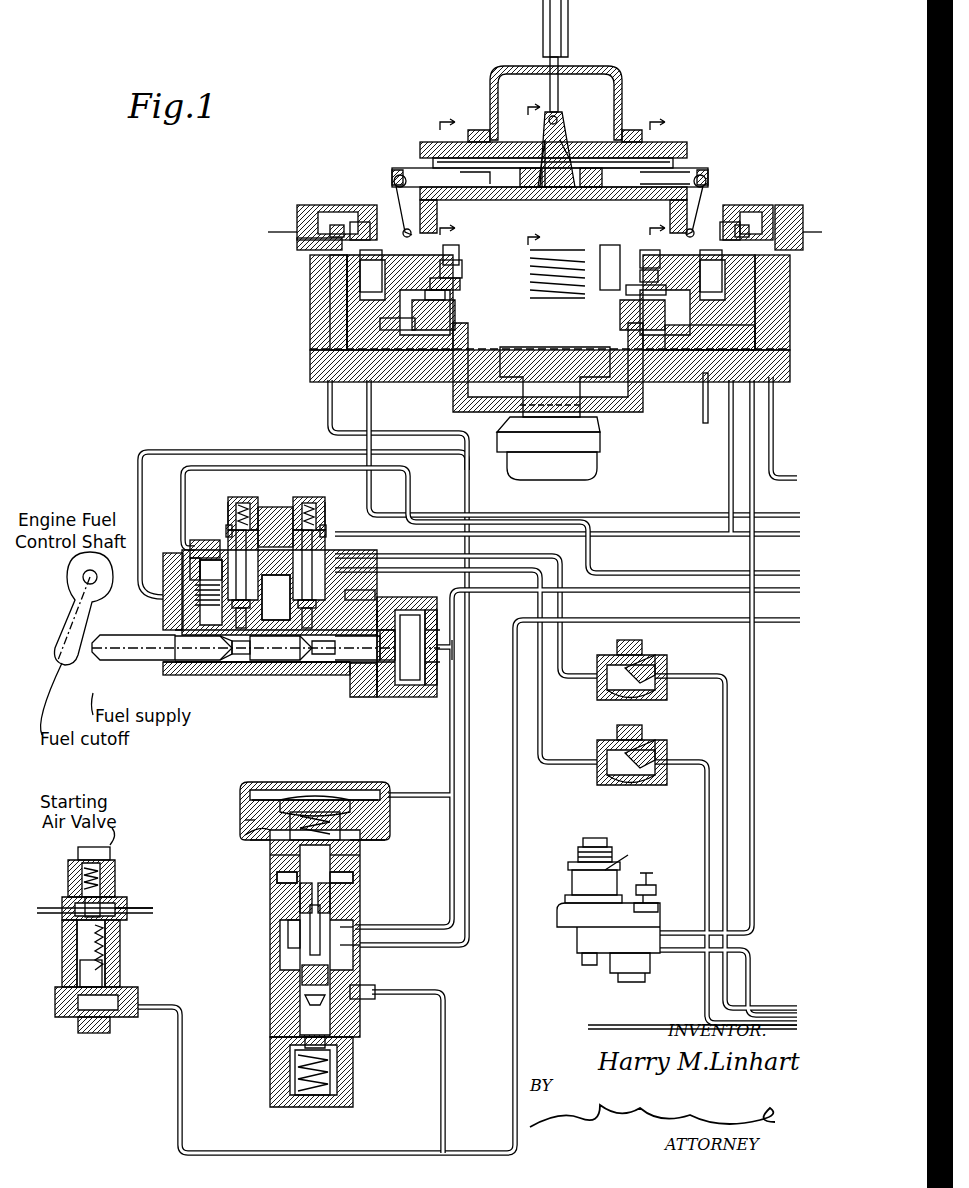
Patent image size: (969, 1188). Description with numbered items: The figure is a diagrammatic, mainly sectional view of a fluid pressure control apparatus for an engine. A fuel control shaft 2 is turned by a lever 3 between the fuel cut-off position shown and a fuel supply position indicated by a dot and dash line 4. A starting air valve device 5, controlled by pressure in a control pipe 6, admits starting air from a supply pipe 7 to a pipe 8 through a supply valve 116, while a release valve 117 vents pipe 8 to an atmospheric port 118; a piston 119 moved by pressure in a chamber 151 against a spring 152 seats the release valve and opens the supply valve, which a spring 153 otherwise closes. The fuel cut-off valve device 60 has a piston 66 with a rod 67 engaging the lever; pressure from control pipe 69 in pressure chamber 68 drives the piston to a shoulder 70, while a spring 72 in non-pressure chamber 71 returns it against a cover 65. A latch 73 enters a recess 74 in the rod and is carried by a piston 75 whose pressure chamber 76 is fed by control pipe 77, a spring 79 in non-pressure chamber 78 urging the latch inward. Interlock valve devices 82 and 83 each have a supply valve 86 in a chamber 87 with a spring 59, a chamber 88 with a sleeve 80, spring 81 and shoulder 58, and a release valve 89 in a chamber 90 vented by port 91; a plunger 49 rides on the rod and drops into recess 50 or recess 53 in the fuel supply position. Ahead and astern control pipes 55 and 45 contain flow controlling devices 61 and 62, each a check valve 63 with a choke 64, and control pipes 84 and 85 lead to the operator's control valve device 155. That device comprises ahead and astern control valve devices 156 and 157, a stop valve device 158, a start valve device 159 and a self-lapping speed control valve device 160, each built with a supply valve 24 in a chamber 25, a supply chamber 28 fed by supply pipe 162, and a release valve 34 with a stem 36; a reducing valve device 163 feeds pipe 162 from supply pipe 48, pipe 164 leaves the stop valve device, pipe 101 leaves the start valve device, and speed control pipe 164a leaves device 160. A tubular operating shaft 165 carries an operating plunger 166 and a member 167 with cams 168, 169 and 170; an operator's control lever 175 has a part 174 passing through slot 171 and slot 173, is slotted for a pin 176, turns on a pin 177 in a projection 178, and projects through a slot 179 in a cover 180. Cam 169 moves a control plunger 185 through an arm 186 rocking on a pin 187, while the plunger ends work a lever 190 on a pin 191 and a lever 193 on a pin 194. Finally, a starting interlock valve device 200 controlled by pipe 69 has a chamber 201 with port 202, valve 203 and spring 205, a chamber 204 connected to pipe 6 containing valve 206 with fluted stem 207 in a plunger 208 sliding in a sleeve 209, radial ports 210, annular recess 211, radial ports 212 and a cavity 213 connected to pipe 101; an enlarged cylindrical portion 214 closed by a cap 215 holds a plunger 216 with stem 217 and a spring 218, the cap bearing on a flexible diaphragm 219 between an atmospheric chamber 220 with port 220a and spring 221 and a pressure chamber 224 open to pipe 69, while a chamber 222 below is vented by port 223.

The fuel control shaft 2 is at (82, 575).
The lever 3 is at (42, 608).
The dot and dash line 4 is at (75, 688).
The starting air valve device 5 is at (33, 968).
The control pipe 6 is at (183, 1112).
The starting air supply pipe 7 is at (145, 908).
The pipe 8 is at (38, 908).
The supply valve 24 is at (300, 235).
The chamber 25 is at (305, 205).
The chamber 28 is at (332, 222).
The release valve 34 is at (358, 222).
The stem 36 is at (475, 248).
The astern control pipe 45 is at (495, 575).
The supply pipe 48 is at (630, 1025).
The plunger 49 is at (267, 647).
The recess 50 is at (295, 662).
The recess 53 is at (235, 662).
The ahead control pipe 55 is at (518, 565).
The shoulder 58 is at (195, 683).
The spring 59 is at (268, 501).
The fuel cut-off valve device 60 is at (243, 686).
The flow controlling device 61 is at (590, 693).
The flow controlling device 62 is at (590, 777).
The check valve 63 is at (645, 668).
The choke 64 is at (600, 665).
The cover 65 is at (440, 606).
The piston 66 is at (410, 685).
The rod 67 is at (265, 662).
The pressure chamber 68 is at (432, 690).
The control pipe 69 is at (455, 636).
The shoulder 70 is at (385, 606).
The non-pressure chamber 71 is at (375, 690).
The spring 72 is at (355, 697).
The latch 73 is at (170, 615).
The recess 74 is at (180, 670).
The piston 75 is at (190, 565).
The pressure chamber 76 is at (168, 598).
The control pipe 77 is at (175, 458).
The non-pressure chamber 78 is at (200, 562).
The spring 79 is at (190, 565).
The sleeve 80 is at (276, 597).
The spring 81 is at (275, 527).
The interlock valve device 82 is at (308, 503).
The interlock valve device 83 is at (252, 500).
The control pipe 84 is at (447, 530).
The control pipe 85 is at (507, 514).
The supply valve 86 is at (228, 525).
The chamber 87 is at (228, 512).
The chamber 88 is at (236, 552).
The release valve 89 is at (358, 591).
The chamber 90 is at (252, 604).
The port 91 is at (274, 621).
The pipe 101 is at (470, 695).
The fluid pressure supply valve 116 is at (100, 905).
The release valve 117 is at (118, 950).
The atmospheric port 118 is at (65, 945).
The piston 119 is at (70, 1003).
The chamber 151 is at (85, 1020).
The spring 152 is at (80, 985).
The spring 153 is at (100, 870).
The operator's control valve device 155 is at (310, 290).
The ahead control valve device 156 is at (625, 260).
The astern control valve device 157 is at (470, 287).
The stop valve device 158 is at (766, 205).
The start valve device 159 is at (338, 200).
The self-lapping speed control valve device 160 is at (603, 436).
The supply pipe 162 is at (754, 705).
The reducing valve device 163 is at (570, 880).
The pipe 164 is at (774, 415).
The speed control pipe 164a is at (704, 420).
The operating shaft 165 is at (675, 160).
The operating plunger 166 is at (690, 166).
The member 167 is at (665, 145).
The cam 168 is at (550, 178).
The cam 169 is at (530, 204).
The cam 170 is at (667, 178).
The slot 171 is at (568, 160).
The slot 173 is at (473, 178).
The part 174 is at (566, 140).
The operator's control lever 175 is at (565, 60).
The pin 176 is at (517, 178).
The pin 177 is at (558, 116).
The projection 178 is at (540, 150).
The slot 179 is at (552, 75).
The cover 180 is at (498, 70).
The control plunger 185 is at (557, 264).
The arm 186 is at (557, 287).
The pin 187 is at (618, 178).
The lever 190 is at (390, 200).
The pin 191 is at (347, 302).
The lever 193 is at (705, 210).
The pin 194 is at (710, 329).
The starting interlock valve device 200 is at (376, 981).
The chamber 201 is at (340, 1067).
The port 202 is at (285, 1048).
The valve 203 is at (340, 1040).
The chamber 204 is at (370, 1002).
The spring 205 is at (340, 1082).
The valve 206 is at (305, 998).
The fluted stem 207 is at (300, 975).
The plunger 208 is at (292, 898).
The sleeve 209 is at (350, 905).
The radial ports 210 is at (350, 930).
The annular recess 211 is at (295, 950).
The radial ports 212 is at (288, 930).
The cavity 213 is at (352, 948).
The enlarged cylindrical portion 214 is at (390, 836).
The cap 215 is at (330, 795).
The plunger 216 is at (275, 862).
The stem 217 is at (350, 866).
The spring 218 is at (345, 820).
The flexible diaphragm 219 is at (262, 790).
The chamber 220 is at (250, 812).
The port 220a is at (250, 840).
The spring 221 is at (248, 822).
The chamber 222 is at (350, 878).
The port 223 is at (278, 880).
The pressure chamber 224 is at (290, 795).